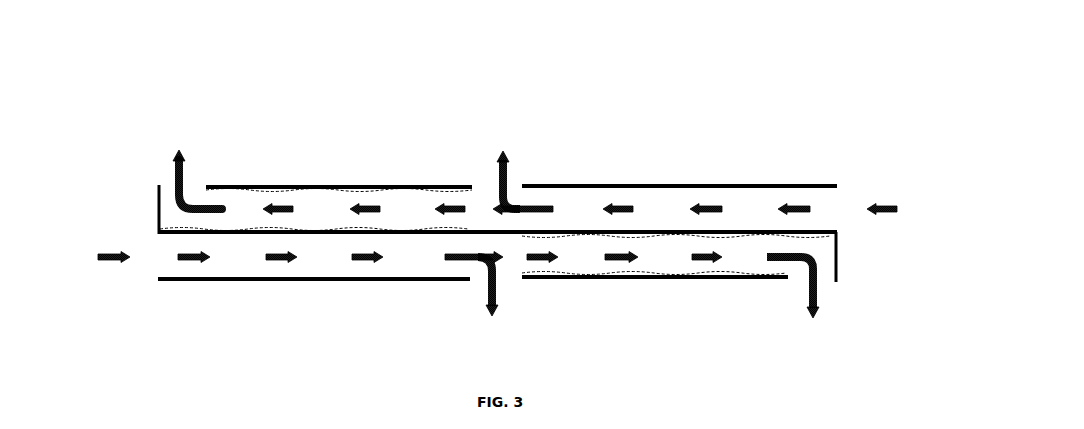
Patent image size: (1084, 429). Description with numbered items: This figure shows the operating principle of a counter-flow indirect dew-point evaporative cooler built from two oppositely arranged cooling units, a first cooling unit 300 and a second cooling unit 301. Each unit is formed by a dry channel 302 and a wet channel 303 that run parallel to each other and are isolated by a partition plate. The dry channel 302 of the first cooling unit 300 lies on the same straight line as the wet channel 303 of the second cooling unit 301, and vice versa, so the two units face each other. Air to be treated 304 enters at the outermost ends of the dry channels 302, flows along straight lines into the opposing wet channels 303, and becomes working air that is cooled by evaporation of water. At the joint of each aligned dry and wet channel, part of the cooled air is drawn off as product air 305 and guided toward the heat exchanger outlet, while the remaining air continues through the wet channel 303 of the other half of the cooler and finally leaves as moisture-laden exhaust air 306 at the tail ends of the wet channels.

The first cooling unit 300 is at (275, 90).
The second cooling unit 301 is at (673, 90).
The dry channel 302 is at (752, 198).
The wet channel 303 is at (333, 203).
The air to be treated 304 is at (501, 231).
The product air 305 is at (499, 238).
The exhaust air 306 is at (492, 234).